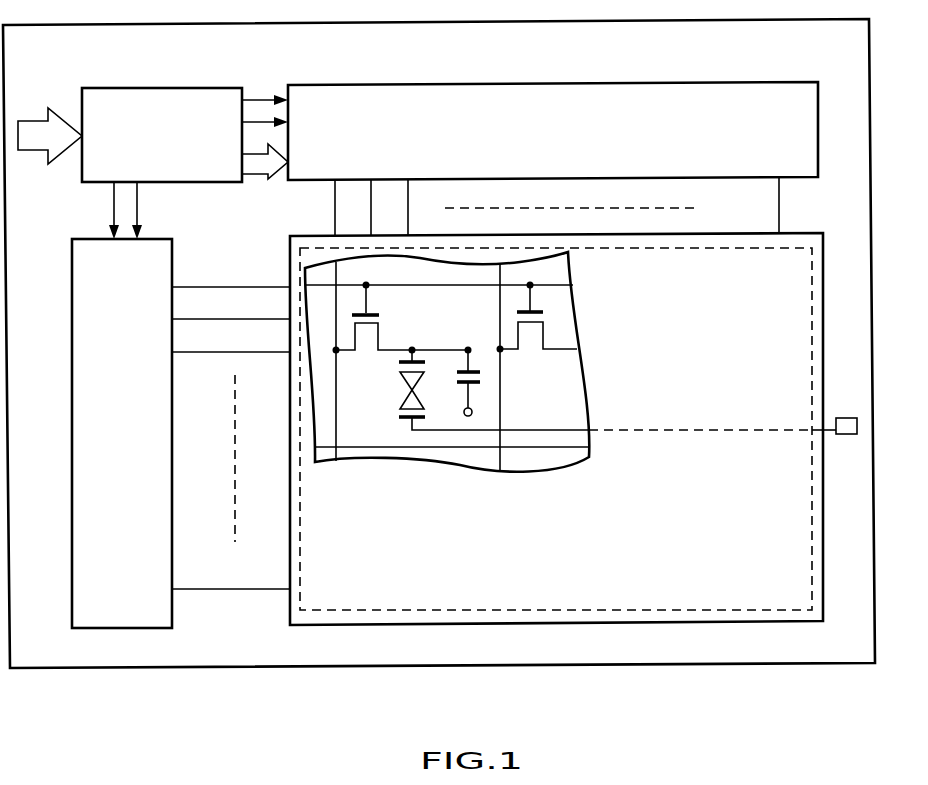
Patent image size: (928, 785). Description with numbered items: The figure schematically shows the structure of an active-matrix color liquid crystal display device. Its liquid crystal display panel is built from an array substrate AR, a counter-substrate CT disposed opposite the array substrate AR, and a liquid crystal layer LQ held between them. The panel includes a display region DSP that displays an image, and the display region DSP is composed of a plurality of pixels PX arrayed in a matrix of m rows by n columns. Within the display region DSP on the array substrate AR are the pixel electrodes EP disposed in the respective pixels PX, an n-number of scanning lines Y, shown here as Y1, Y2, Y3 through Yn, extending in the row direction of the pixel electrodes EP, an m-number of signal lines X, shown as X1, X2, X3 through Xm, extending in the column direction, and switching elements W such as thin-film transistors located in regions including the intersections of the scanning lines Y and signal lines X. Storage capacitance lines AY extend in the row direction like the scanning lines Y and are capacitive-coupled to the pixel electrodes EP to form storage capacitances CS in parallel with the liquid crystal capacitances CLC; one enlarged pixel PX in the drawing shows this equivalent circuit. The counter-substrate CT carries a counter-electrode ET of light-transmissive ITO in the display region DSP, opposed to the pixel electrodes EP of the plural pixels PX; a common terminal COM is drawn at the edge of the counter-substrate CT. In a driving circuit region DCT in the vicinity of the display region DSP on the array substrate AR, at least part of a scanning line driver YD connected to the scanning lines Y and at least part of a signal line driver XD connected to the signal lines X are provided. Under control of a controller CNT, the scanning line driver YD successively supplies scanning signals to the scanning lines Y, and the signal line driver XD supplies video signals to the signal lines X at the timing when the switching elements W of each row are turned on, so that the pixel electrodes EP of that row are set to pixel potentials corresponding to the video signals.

The array substrate AR is at (833, 640).
The controller CNT is at (158, 100).
The signal line driver XD is at (769, 103).
The scanning line driver YD is at (72, 427).
The signal line X1 is at (321, 208).
The signal line X2 is at (356, 208).
The signal line X3 is at (393, 208).
The signal line Xm is at (759, 205).
The scanning line Y1 is at (231, 274).
The scanning line Y2 is at (231, 307).
The scanning line Y3 is at (231, 339).
The scanning line Yn is at (231, 577).
The display region DSP is at (612, 612).
The counter-substrate CT is at (818, 378).
The common terminal COM is at (830, 437).
The driving circuit region DCT is at (258, 640).
The pixel PX is at (375, 432).
The signal line X is at (345, 418).
The scanning line Y is at (550, 286).
The switching element W is at (384, 318).
The liquid crystal capacitance CLC is at (468, 411).
The pixel electrode EP is at (436, 366).
The liquid crystal layer LQ is at (425, 397).
The counter-electrode ET is at (405, 425).
The storage capacitance CS is at (493, 378).
The storage capacitance line AY is at (473, 413).